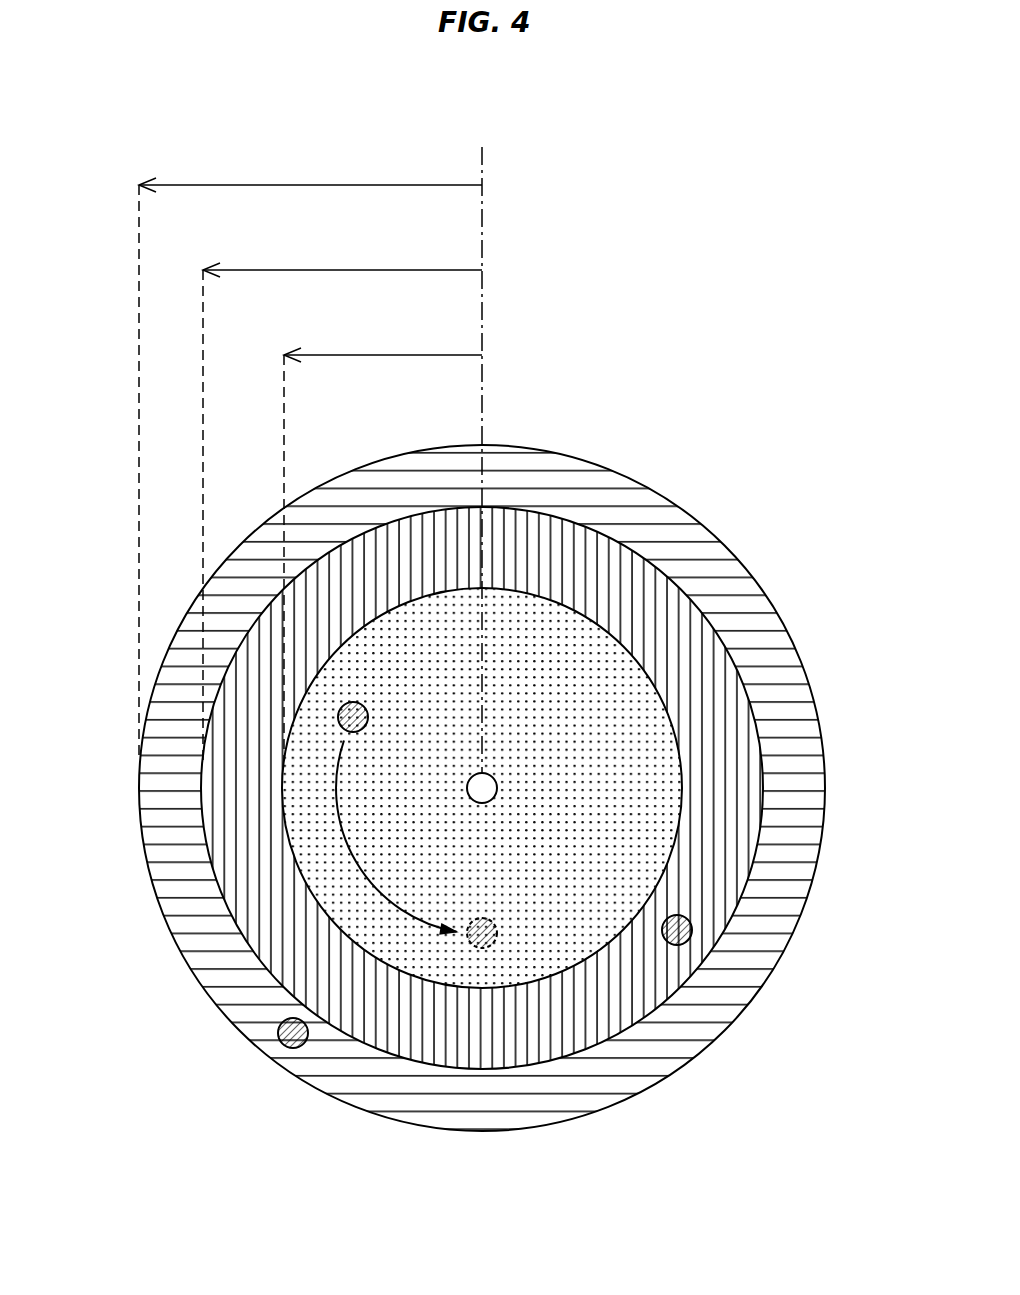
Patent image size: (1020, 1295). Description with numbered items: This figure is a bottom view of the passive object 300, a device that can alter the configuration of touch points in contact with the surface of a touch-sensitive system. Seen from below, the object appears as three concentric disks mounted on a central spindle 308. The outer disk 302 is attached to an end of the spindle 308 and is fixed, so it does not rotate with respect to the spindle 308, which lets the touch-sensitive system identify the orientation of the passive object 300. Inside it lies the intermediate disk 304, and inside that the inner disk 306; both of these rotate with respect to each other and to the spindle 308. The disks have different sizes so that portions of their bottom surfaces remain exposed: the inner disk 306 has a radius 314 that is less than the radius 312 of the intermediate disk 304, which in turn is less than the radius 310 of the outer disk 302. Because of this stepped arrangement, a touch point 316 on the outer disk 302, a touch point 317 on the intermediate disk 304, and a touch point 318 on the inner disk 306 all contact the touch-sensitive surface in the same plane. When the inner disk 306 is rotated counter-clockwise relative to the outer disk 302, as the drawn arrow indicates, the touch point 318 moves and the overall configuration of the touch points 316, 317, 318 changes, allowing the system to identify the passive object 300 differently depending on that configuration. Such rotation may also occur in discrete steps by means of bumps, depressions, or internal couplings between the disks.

The passive object 300 is at (475, 645).
The outer disk 302 is at (733, 978).
The intermediate disk 304 is at (640, 988).
The inner disk 306 is at (547, 940).
The spindle 308 is at (497, 790).
The radius of outer disk 310 is at (268, 185).
The radius of intermediate disk 312 is at (342, 270).
The radius of inner disk 314 is at (397, 355).
The touch point 316 is at (280, 1040).
The touch point 317 is at (692, 922).
The touch point 318 is at (343, 730).